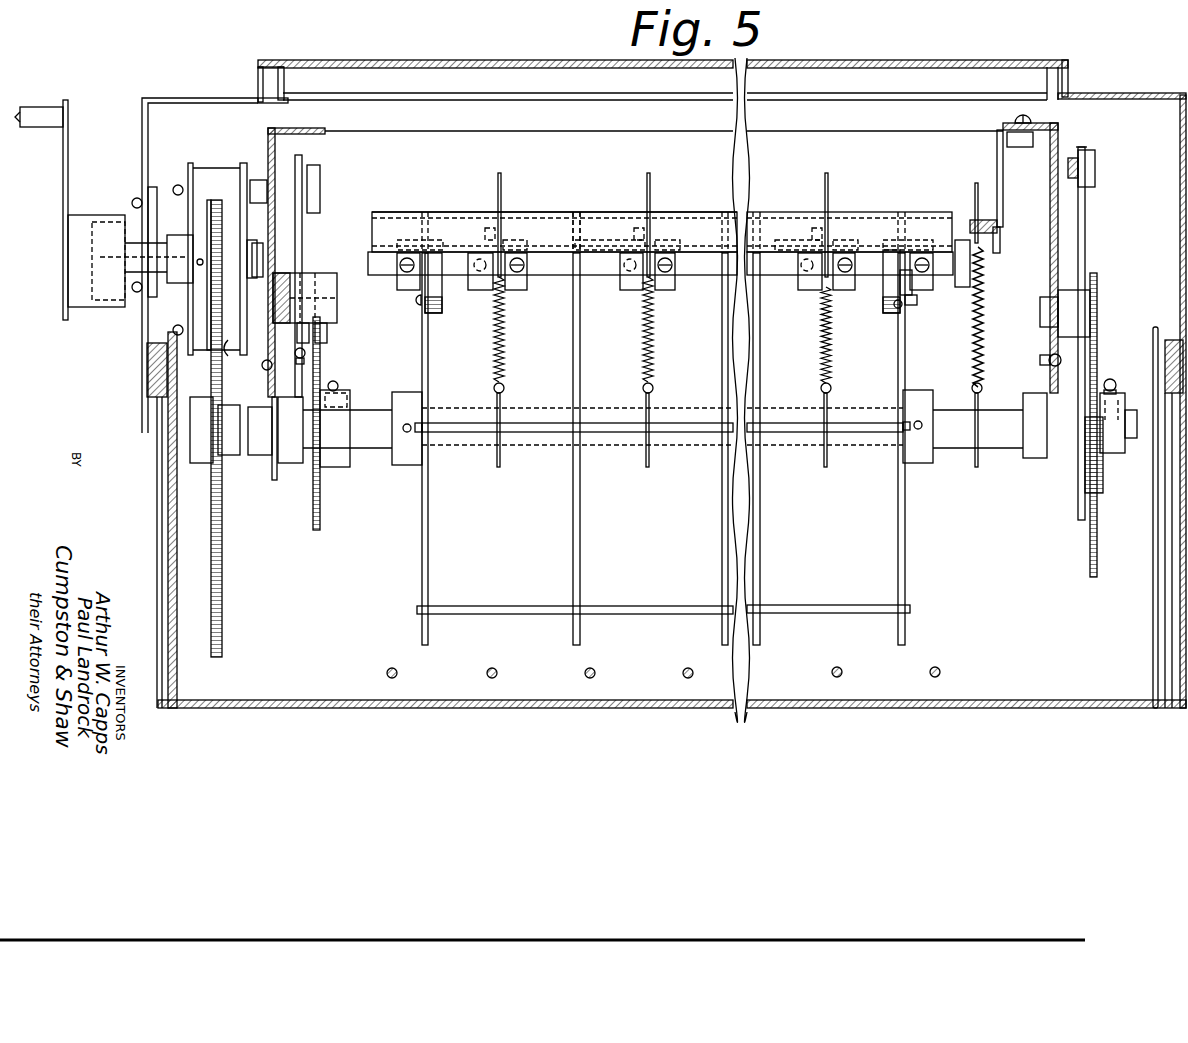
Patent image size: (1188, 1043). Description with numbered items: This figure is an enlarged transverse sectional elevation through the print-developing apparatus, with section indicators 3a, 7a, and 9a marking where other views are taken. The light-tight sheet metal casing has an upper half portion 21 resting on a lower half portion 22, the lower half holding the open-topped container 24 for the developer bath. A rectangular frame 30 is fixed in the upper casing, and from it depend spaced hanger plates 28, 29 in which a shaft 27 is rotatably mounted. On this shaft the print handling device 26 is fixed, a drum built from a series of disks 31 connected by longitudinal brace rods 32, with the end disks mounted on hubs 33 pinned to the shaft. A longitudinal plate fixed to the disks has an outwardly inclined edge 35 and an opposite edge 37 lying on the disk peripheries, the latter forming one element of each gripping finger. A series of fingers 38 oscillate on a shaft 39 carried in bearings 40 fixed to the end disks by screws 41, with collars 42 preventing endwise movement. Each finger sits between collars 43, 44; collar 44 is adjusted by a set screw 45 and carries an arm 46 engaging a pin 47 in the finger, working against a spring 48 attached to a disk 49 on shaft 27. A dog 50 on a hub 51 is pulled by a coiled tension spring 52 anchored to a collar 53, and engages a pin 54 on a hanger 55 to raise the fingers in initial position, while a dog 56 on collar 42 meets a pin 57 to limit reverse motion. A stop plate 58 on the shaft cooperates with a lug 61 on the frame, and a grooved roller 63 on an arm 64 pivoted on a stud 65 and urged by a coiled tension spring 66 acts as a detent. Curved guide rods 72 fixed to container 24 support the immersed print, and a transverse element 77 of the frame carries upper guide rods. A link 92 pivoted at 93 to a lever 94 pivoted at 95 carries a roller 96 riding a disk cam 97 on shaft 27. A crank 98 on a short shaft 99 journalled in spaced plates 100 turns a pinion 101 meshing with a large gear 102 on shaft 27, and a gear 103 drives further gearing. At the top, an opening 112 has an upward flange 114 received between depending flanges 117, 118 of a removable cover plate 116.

The upper half portion 21 is at (201, 98).
The lower half portion 22 is at (160, 594).
The container 24 is at (180, 685).
The print handling device 26 is at (460, 210).
The shaft 27 is at (381, 449).
The hanger plate 28 is at (270, 460).
The hanger plate 29 is at (1040, 460).
The rectangular frame 30 is at (268, 148).
The disks 31 is at (422, 570).
The longitudinal brace rods 32 is at (552, 434).
The hubs 33 is at (406, 466).
The outwardly inclined edge 35 is at (555, 244).
The opposite edge 37 is at (594, 212).
The fingers 38 is at (503, 186).
The shaft 39 is at (566, 277).
The bearings 40 is at (441, 313).
The screws 41 is at (418, 306).
The collars 42 is at (403, 290).
The collar 43 is at (517, 291).
The collar 44 is at (478, 290).
The set screw 45 is at (474, 265).
The arm 46 is at (490, 245).
The pin 47 is at (485, 232).
The spring 48 is at (507, 355).
The disk 49 is at (505, 390).
The dog 50 is at (975, 188).
The hub 51 is at (962, 240).
The coiled tension spring 52 is at (972, 346).
The collar 53 is at (975, 455).
The pin 54 is at (998, 225).
The hanger 55 is at (1004, 182).
The dog 56 is at (913, 286).
The pin 57 is at (911, 307).
The stop plate 58 is at (321, 502).
The lug 61 is at (321, 275).
The grooved roller 63 is at (327, 333).
The arm 64 is at (305, 246).
The stud 65 is at (321, 176).
The coiled tension spring 66 is at (306, 355).
The guide rods 72 is at (487, 672).
The transverse element 77 is at (492, 138).
The link 92 is at (1083, 145).
The pivot 93 is at (1096, 169).
The lever 94 is at (1087, 226).
The pivot 95 is at (1072, 312).
The roller 96 is at (1085, 490).
The disk cam 97 is at (1098, 346).
The crank 98 is at (71, 186).
The shaft 99 is at (116, 292).
The plates 100 is at (195, 168).
The pinion 101 is at (206, 228).
The gear 102 is at (223, 545).
The gear 103 is at (232, 356).
The opening 112 is at (284, 101).
The flange 114 is at (262, 84).
The cover plate 116 is at (390, 62).
The depending flange 117 is at (260, 66).
The depending flange 118 is at (286, 91).
The section line 3a is at (160, 330).
The section line 7a is at (868, 330).
The section line 9a is at (290, 143).